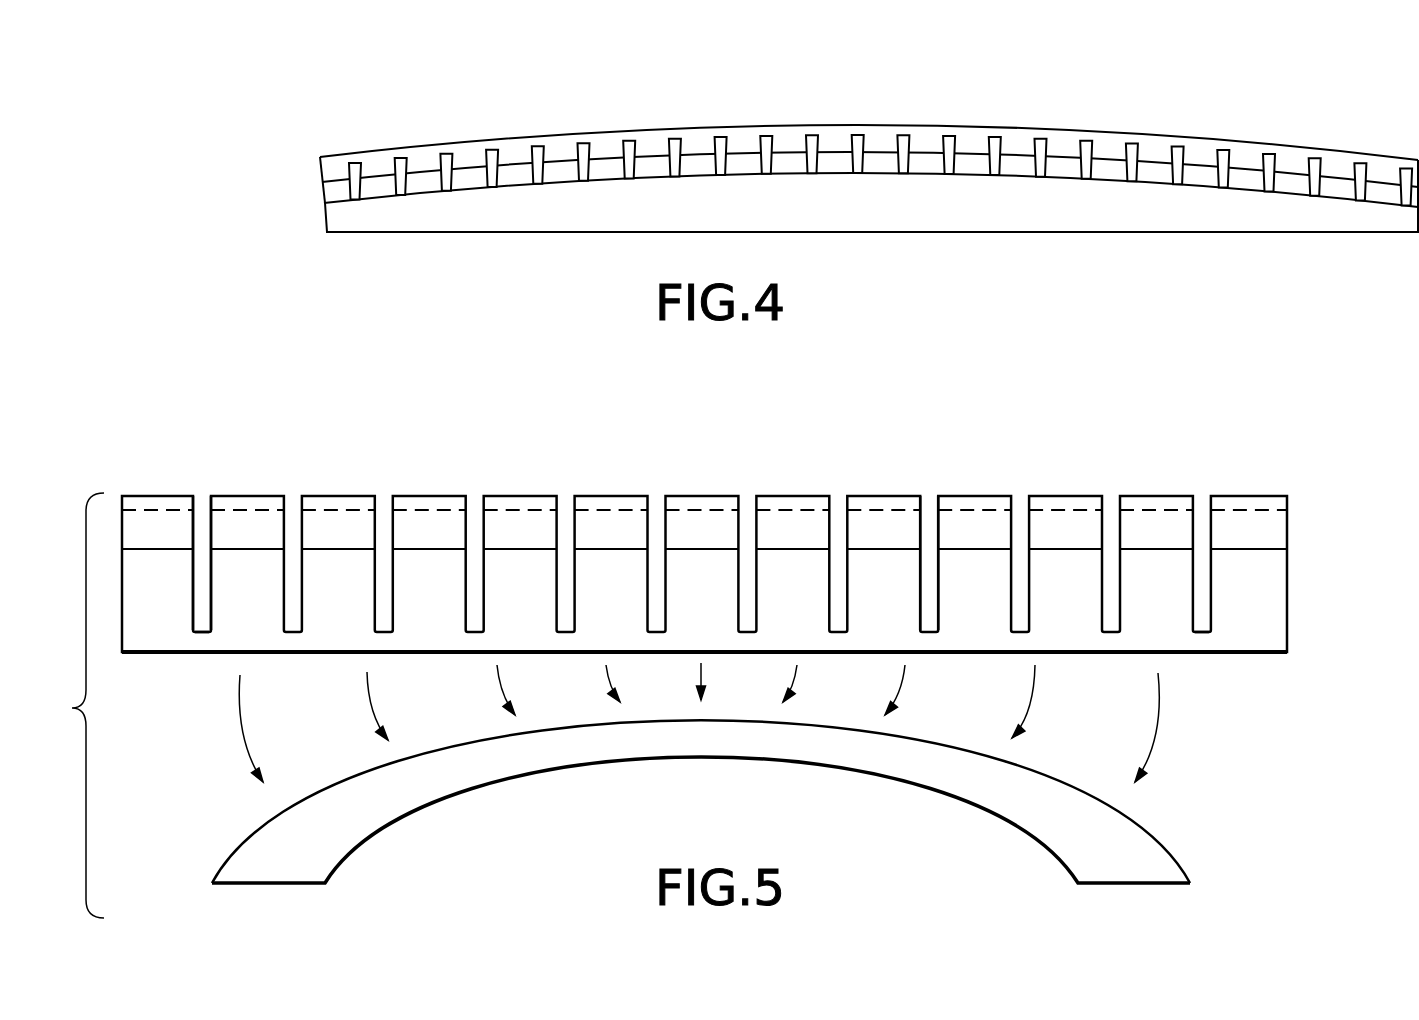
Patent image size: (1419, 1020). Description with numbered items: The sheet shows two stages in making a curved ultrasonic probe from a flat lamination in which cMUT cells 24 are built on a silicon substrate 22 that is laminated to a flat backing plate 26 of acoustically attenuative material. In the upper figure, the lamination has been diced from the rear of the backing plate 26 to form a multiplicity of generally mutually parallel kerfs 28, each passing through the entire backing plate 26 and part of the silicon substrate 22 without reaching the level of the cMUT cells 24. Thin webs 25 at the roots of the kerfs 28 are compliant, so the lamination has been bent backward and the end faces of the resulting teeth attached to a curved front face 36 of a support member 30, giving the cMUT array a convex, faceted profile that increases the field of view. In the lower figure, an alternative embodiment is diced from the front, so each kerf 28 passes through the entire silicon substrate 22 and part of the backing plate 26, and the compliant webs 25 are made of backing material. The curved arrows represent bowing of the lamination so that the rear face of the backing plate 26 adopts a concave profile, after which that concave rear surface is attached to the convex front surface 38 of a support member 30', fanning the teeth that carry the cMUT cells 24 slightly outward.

In FIG. 4, the silicon substrate 22 is at (320, 173).
In FIG. 5, the silicon substrate 22 is at (1273, 522).
In FIG. 5, the cMUT cells 24 is at (1262, 495).
In FIG. 5, the thin webs 25 is at (202, 642).
In FIG. 4, the backing plate 26 is at (325, 195).
In FIG. 5, the backing plate 26 is at (1272, 604).
In FIG. 4, the kerfs 28 is at (367, 197).
In FIG. 5, the kerfs 28 is at (928, 497).
In FIG. 4, the curved support member 30 is at (871, 219).
In FIG. 5, the support member 30' is at (702, 850).
In FIG. 4, the curved front face 36 is at (1058, 168).
In FIG. 5, the convex front surface 38 is at (1158, 835).